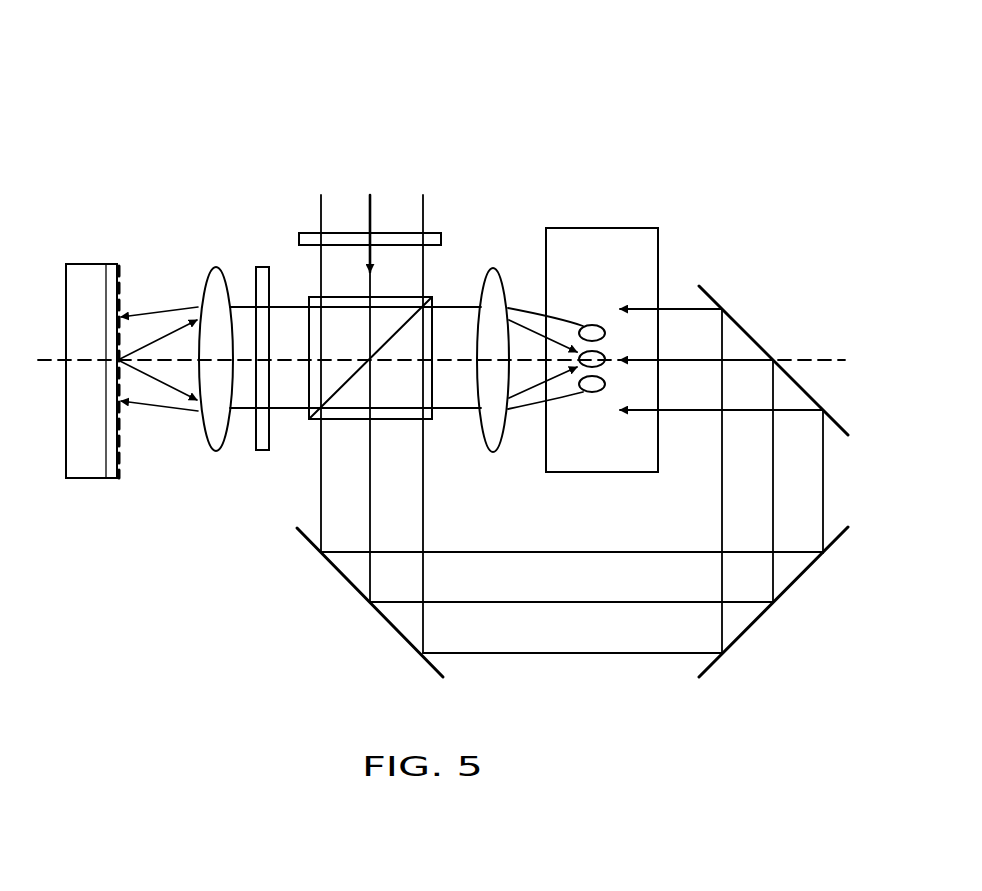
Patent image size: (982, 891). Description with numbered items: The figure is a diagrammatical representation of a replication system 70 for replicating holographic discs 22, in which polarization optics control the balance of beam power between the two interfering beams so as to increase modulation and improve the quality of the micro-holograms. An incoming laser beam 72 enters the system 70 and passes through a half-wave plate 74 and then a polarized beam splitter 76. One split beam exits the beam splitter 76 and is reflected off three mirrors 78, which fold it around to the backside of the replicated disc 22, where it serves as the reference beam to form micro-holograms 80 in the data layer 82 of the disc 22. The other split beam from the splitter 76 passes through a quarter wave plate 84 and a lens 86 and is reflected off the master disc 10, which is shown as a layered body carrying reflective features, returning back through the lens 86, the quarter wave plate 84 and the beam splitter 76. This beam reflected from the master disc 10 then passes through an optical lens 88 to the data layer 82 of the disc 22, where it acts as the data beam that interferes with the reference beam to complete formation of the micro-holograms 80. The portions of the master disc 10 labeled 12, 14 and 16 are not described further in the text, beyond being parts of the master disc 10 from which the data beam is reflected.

The replication system 70 is at (694, 82).
The master disc 10 is at (88, 258).
The patterned features 12 is at (118, 471).
The substrate 14 is at (85, 472).
The layer on substrate 16 is at (109, 268).
The holographic disc 22 is at (630, 268).
The incoming laser beam 72 is at (372, 210).
The half-wave plate 74 is at (299, 239).
The polarized beam splitter 76 is at (400, 297).
The mirrors 78 is at (812, 398).
The micro-holograms 80 is at (592, 392).
The data layer 82 is at (590, 258).
The quarter wave plate 84 is at (250, 440).
The lens 86 is at (216, 266).
The optical lens 88 is at (493, 452).